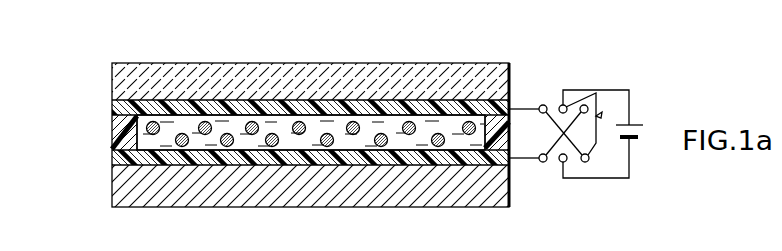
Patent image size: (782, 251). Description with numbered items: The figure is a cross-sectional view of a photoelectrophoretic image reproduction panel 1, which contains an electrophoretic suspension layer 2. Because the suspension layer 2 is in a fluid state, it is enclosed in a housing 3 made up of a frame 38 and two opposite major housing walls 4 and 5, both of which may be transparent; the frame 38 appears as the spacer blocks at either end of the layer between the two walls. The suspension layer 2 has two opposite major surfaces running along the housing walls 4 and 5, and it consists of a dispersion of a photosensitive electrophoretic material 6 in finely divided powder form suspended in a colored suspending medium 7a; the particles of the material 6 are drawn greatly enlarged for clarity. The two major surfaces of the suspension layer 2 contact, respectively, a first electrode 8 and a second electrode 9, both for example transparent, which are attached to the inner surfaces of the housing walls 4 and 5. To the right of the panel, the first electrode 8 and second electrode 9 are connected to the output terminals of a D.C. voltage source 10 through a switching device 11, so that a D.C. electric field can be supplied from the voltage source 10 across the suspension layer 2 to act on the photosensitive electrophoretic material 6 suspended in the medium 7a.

The photoelectrophoretic image reproduction panel 1 is at (293, 62).
The electrophoretic suspension layer 2 is at (207, 150).
The housing 3 is at (110, 57).
The major housing wall 4 is at (117, 80).
The major housing wall 5 is at (117, 183).
The photosensitive electrophoretic material 6 is at (234, 143).
The colored suspending medium 7a is at (300, 146).
The first electrode 8 is at (113, 105).
The second electrode 9 is at (113, 157).
The D.C. voltage source 10 is at (638, 123).
The switching device 11 is at (546, 104).
The frame 38 is at (118, 128).